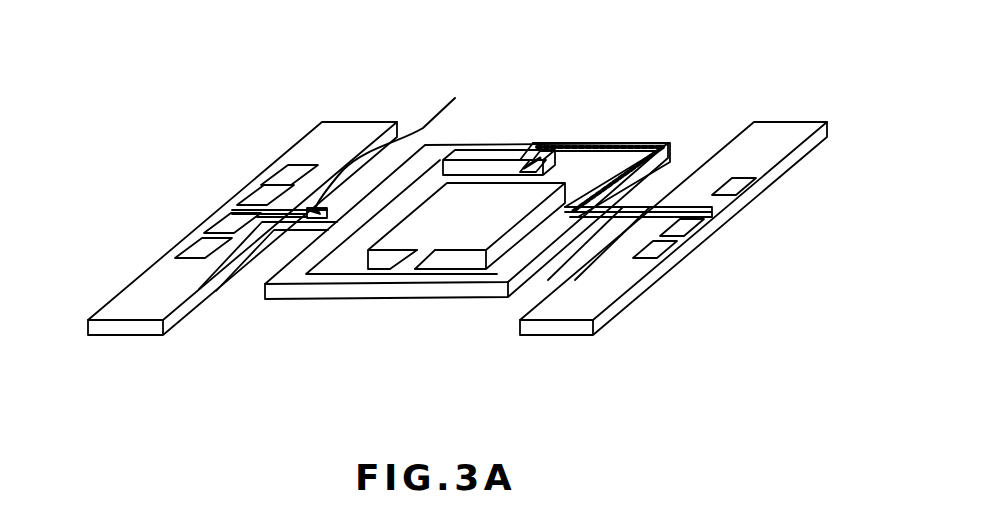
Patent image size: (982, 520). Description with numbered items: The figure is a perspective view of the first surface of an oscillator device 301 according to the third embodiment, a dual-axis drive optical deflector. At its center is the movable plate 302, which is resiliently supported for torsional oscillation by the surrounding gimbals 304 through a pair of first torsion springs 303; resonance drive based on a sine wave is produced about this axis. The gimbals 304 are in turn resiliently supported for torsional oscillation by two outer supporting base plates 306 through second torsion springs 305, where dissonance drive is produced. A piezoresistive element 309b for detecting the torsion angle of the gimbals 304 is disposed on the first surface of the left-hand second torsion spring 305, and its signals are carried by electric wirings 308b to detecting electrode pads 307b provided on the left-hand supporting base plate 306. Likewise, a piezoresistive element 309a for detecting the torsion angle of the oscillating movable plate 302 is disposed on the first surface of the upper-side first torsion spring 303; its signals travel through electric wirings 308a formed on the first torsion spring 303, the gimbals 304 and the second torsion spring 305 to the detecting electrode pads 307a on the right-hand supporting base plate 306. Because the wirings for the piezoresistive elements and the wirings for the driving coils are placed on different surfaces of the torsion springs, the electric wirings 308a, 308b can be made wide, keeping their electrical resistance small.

The oscillator device 301 is at (410, 118).
The movable plate 302 is at (463, 228).
The first torsion springs 303 is at (517, 158).
The gimbals 304 is at (343, 280).
The second torsion springs 305 is at (289, 228).
The supporting base plates 306 is at (143, 305).
The detecting electrode pads 307a is at (663, 248).
The detecting electrode pads 307b is at (230, 225).
The electric wirings 308a is at (585, 143).
The electric wirings 308b is at (272, 190).
The piezoresistive element 309a is at (532, 155).
The piezoresistive element 309b is at (389, 139).